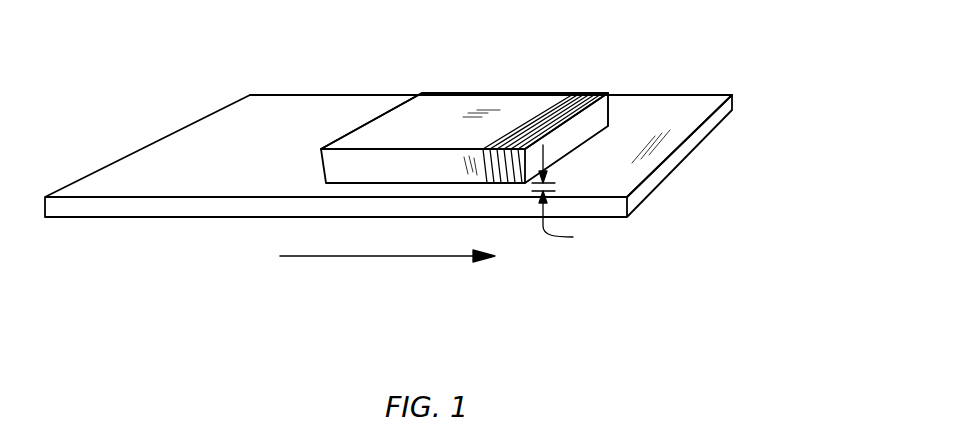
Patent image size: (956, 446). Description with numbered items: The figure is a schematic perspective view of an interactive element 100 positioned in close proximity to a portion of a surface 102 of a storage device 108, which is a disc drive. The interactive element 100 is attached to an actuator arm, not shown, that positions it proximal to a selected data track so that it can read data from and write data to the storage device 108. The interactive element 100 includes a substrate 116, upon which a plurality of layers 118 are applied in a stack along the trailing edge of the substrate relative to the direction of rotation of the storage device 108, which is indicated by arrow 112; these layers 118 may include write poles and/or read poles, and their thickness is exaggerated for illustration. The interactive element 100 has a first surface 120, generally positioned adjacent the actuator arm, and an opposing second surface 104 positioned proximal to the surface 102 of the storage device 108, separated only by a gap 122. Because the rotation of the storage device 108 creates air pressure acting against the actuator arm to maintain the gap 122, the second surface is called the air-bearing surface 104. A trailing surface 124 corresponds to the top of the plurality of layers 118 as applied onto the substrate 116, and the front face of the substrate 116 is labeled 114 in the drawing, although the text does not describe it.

The interactive element 100 is at (482, 100).
The surface 102 is at (254, 143).
The air-bearing surface 104 is at (563, 160).
The storage device 108 is at (690, 93).
The arrow 112 is at (329, 257).
The front face of component 114 is at (357, 165).
The substrate 116 is at (413, 103).
The plurality of layers 118 is at (598, 93).
The first surface 120 is at (460, 116).
The gap 122 is at (574, 198).
The trailing surface 124 is at (595, 123).